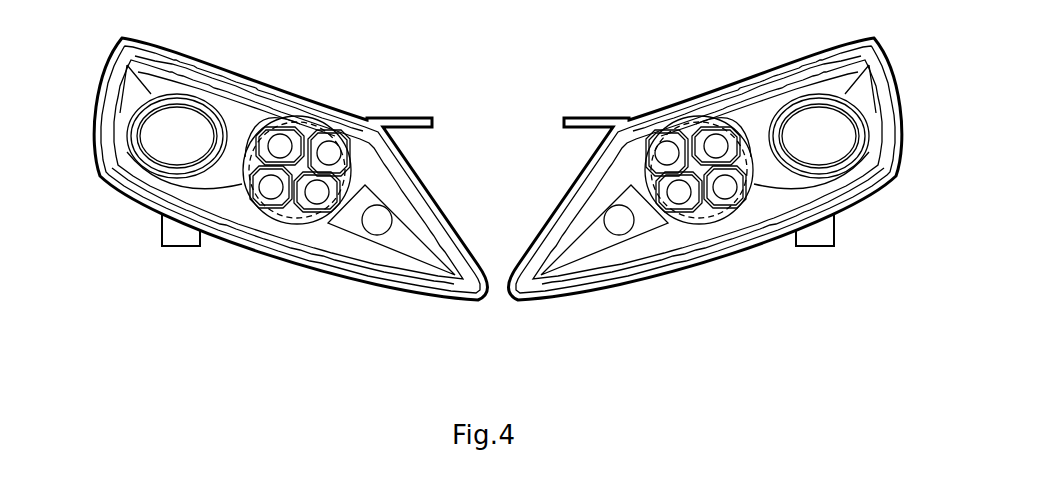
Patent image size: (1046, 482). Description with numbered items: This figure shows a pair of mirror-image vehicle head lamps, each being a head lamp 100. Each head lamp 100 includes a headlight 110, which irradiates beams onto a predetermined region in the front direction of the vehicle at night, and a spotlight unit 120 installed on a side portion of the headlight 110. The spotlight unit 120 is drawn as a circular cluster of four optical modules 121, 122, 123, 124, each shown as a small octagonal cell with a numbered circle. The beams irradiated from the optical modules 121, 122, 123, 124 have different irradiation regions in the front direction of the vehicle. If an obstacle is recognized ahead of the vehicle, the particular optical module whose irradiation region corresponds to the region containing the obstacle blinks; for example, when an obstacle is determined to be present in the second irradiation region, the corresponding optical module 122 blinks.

The head lamp 100 is at (132, 183).
The headlight 110 is at (187, 110).
The spotlight unit 120 is at (362, 163).
The optical module 121 is at (332, 140).
The optical module 122 is at (316, 200).
The optical module 123 is at (263, 137).
The optical module 124 is at (267, 200).